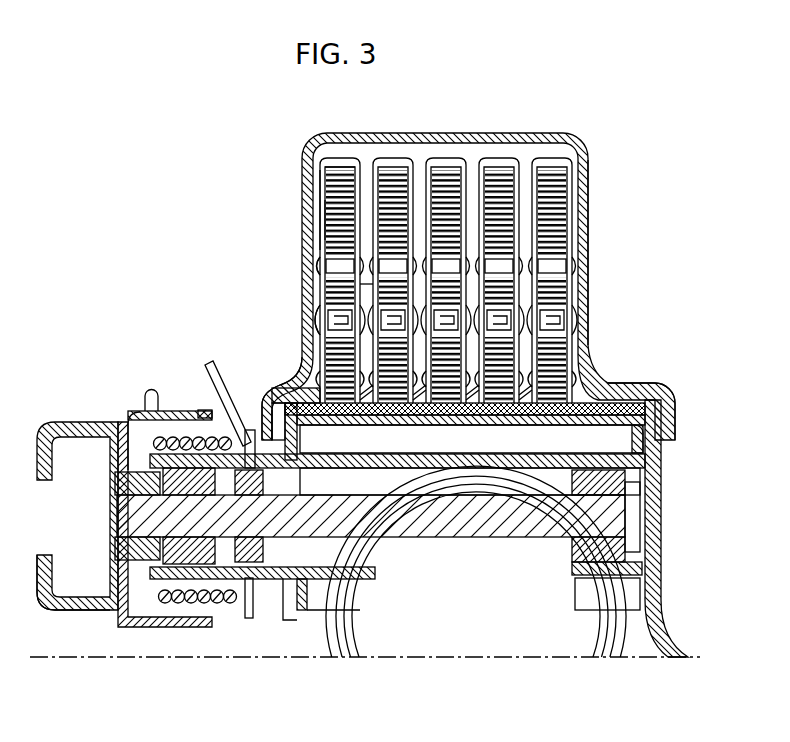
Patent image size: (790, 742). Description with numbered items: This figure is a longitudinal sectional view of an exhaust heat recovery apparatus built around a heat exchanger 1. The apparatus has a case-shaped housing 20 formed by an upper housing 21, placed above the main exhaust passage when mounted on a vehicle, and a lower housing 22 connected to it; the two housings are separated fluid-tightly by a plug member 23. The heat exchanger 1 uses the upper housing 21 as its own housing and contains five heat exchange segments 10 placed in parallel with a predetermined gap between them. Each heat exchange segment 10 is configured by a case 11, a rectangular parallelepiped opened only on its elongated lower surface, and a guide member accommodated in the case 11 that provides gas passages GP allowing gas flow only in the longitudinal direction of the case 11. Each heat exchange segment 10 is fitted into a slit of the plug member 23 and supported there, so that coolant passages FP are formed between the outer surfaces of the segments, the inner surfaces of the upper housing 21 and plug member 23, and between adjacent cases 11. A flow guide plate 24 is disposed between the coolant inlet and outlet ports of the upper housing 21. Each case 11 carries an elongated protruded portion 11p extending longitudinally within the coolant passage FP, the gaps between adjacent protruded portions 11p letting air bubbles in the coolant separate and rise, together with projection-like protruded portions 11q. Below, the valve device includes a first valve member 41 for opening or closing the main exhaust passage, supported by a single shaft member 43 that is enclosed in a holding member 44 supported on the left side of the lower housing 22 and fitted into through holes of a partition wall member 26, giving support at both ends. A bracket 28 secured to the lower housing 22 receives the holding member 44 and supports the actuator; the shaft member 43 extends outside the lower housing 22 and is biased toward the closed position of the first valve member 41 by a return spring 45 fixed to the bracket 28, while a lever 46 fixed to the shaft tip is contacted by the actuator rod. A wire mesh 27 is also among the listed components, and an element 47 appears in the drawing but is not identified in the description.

The heat exchanger 1 is at (606, 328).
The heat exchange segment 10 is at (554, 158).
The case 11 is at (321, 192).
The protruded portion 11p is at (318, 266).
The protruded portion 11q is at (316, 322).
The housing 20 is at (589, 182).
The upper housing 21 is at (586, 242).
The lower housing 22 is at (652, 481).
The plug member 23 is at (638, 385).
The flow guide plate 24 is at (318, 292).
The partition wall member 26 is at (657, 456).
The wire mesh 27 is at (297, 452).
The bracket 28 is at (178, 385).
The first valve member 41 is at (562, 636).
The shaft member 43 is at (127, 518).
The holding member 44 is at (262, 447).
The return spring 45 is at (138, 621).
The lever 46 is at (47, 597).
The upper bracket 47 is at (90, 424).
The coolant passage FP is at (323, 166).
The passage GP is at (325, 216).